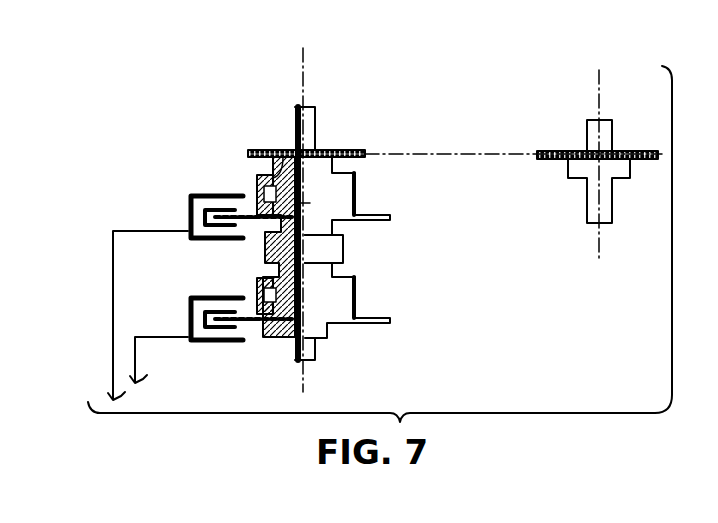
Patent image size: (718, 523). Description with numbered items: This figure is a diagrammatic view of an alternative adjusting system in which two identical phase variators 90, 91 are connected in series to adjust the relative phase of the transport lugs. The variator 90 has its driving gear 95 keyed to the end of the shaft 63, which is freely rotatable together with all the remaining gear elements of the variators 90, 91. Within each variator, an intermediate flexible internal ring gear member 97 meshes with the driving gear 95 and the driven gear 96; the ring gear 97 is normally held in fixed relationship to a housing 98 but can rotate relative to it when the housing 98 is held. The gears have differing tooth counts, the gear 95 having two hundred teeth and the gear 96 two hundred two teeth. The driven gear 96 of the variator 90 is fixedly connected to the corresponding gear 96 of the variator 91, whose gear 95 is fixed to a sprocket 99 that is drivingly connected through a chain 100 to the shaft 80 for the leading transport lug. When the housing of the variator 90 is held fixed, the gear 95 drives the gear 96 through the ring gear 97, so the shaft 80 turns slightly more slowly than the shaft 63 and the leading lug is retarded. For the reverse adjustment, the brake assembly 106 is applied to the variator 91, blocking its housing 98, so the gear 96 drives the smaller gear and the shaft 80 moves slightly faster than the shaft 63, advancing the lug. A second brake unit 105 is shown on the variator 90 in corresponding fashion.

The shaft 63 is at (317, 117).
The shaft 80 is at (610, 123).
The phase variator 90 is at (397, 292).
The phase variator 91 is at (384, 193).
The driving gear 95 is at (292, 148).
The driven gear 96 is at (296, 203).
The flexible internal ring gear member 97 is at (257, 187).
The housing 98 is at (343, 187).
The sprocket 99 is at (364, 151).
The chain 100 is at (470, 152).
The lower reed switch 105 is at (198, 349).
The brake assembly 106 is at (188, 211).